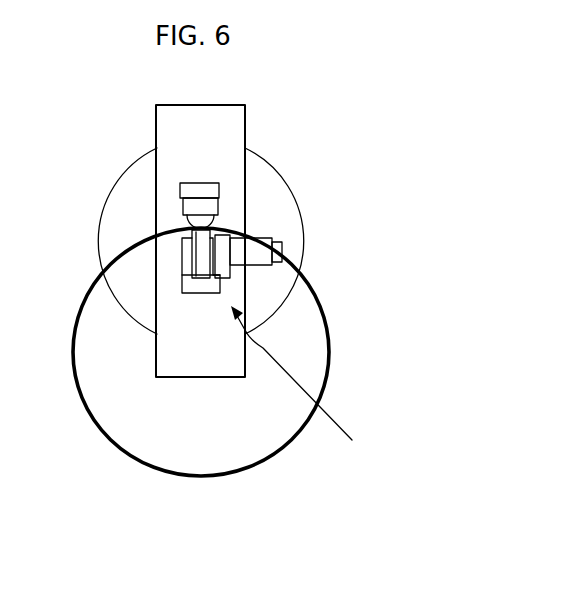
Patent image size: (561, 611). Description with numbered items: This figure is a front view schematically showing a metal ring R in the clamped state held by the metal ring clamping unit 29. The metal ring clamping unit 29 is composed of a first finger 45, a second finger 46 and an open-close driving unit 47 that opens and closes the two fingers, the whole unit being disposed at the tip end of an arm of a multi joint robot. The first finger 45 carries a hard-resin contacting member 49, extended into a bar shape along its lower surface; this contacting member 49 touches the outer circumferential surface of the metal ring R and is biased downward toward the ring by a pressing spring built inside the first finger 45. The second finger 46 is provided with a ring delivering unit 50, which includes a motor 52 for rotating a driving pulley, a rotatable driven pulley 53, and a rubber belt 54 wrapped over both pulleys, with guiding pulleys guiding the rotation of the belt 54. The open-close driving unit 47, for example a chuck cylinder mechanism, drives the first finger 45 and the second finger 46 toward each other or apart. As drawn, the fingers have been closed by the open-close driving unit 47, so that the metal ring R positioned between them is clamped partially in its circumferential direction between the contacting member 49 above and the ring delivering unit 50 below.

The metal ring clamping unit 29 is at (300, 122).
The first finger 45 is at (193, 183).
The second finger 46 is at (203, 294).
The open-close driving unit 47 is at (294, 193).
The contacting member 49 is at (186, 222).
The ring delivering unit 50 is at (305, 383).
The motor 52 is at (277, 242).
The driven pulley 53 is at (183, 252).
The belt 54 is at (198, 276).
The metal ring R is at (328, 315).